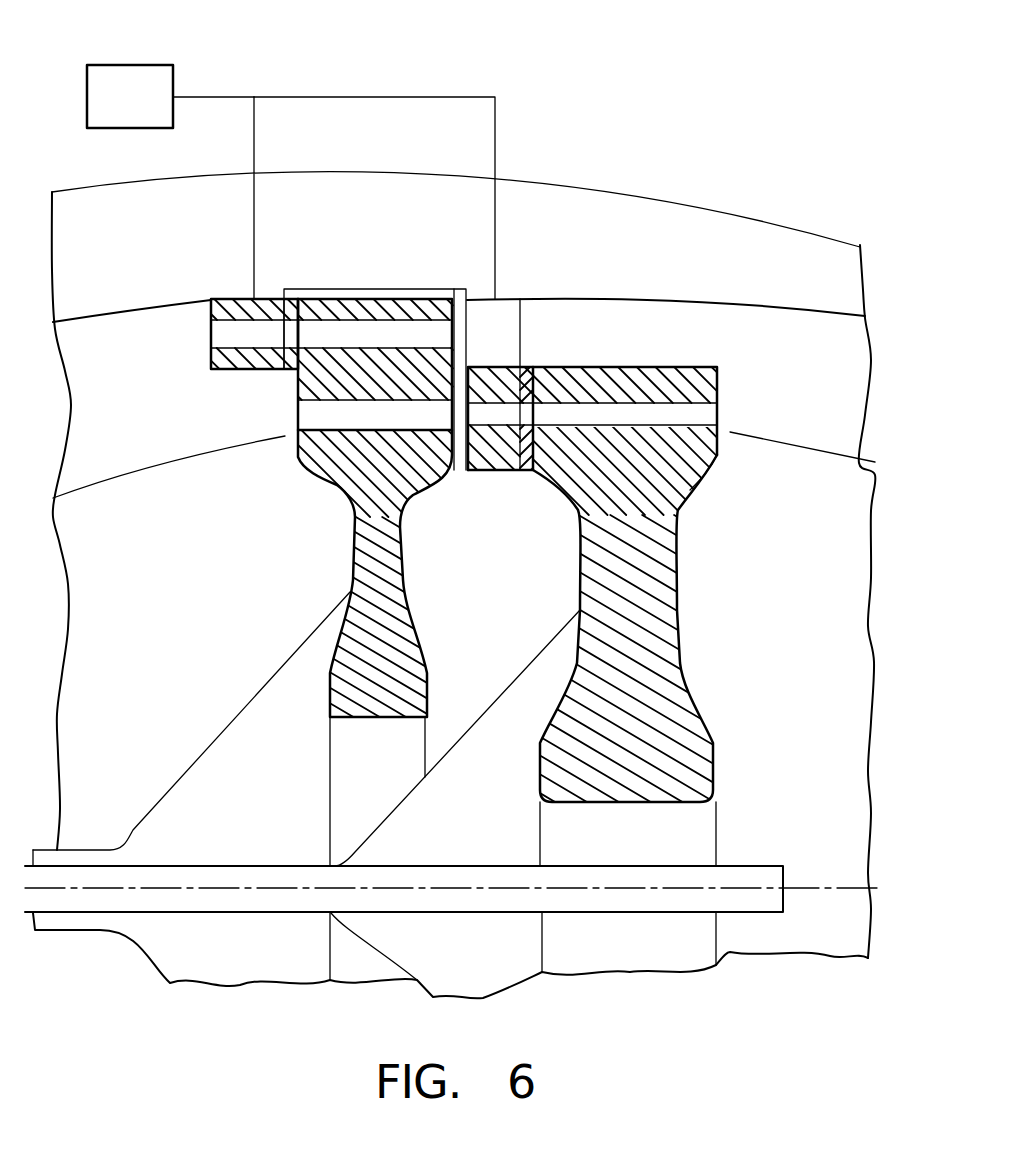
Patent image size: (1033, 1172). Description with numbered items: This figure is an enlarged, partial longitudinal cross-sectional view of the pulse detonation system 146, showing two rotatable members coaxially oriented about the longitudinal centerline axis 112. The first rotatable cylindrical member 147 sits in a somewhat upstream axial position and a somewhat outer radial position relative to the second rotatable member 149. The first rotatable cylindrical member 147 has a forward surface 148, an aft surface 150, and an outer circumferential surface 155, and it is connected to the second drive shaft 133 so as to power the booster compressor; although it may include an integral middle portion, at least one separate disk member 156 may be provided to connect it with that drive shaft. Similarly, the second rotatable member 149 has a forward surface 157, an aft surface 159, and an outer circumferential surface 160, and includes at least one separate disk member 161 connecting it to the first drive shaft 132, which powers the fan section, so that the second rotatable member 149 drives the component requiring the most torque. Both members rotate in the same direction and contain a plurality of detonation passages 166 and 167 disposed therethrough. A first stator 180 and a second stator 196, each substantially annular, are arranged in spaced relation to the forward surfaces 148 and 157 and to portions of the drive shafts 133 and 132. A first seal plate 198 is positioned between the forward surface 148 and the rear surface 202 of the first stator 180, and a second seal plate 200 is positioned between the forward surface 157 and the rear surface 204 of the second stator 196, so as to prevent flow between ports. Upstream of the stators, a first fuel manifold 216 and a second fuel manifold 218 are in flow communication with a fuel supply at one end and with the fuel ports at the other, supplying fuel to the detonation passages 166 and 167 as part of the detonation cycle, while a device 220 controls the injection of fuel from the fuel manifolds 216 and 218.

The longitudinal centerline axis 112 is at (850, 888).
The first drive shaft 132 is at (730, 866).
The second drive shaft 133 is at (72, 850).
The pulse detonation system 146 is at (606, 163).
The first rotatable cylindrical member 147 is at (395, 280).
The forward surface 148 is at (338, 509).
The second rotatable member 149 is at (672, 355).
The aft surface 150 is at (455, 470).
The outer circumferential surface 155 is at (407, 299).
The separate disk member 156 is at (386, 712).
The forward surface 157 is at (517, 443).
The aft surface 159 is at (720, 452).
The outer circumferential surface 160 is at (639, 550).
The separate disk member 161 is at (667, 693).
The detonation passages 166 is at (413, 327).
The detonation passages 167 is at (717, 407).
The first stator 180 is at (237, 303).
The second stator 196 is at (480, 470).
The first seal plate 198 is at (293, 300).
The second seal plate 200 is at (527, 373).
The rear surface 202 is at (288, 333).
The rear surface 204 is at (543, 413).
The first fuel manifold 216 is at (254, 153).
The second fuel manifold 218 is at (495, 143).
The device 220 is at (132, 65).